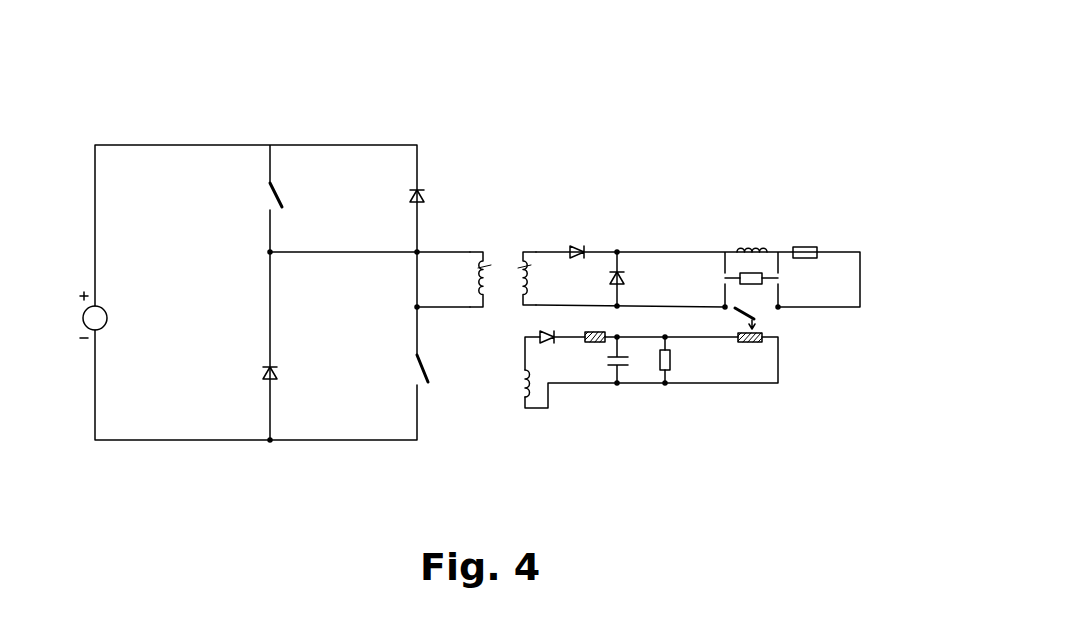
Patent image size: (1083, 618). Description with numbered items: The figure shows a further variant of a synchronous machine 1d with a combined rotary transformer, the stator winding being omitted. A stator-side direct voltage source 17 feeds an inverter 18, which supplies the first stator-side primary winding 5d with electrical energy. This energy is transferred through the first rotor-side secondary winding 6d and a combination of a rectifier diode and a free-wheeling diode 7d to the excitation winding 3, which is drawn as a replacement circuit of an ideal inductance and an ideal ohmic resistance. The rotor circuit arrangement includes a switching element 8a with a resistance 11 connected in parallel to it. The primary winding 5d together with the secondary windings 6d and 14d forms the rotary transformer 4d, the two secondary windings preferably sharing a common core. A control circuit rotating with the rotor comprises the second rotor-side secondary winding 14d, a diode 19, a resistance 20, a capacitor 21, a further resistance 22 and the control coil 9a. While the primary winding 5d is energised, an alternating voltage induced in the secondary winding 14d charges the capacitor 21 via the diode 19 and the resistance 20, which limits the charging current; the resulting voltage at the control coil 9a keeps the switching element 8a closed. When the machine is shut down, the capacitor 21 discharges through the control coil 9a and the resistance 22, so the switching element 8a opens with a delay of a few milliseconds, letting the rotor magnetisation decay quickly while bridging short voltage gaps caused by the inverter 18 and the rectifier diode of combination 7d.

The synchronous machine 1d is at (718, 118).
The excitation winding 3 is at (823, 238).
The transformer 4d is at (548, 206).
The first stator-side primary winding 5d is at (484, 264).
The first rotor-side secondary winding 6d is at (526, 264).
The combination of a rectifier diode and a free-wheeling diode 7d is at (635, 240).
The switching element 8a is at (757, 317).
The control coil 9a is at (764, 341).
The resistance 11 is at (748, 277).
The second rotor-side secondary winding 14d is at (519, 392).
The stator-side direct voltage source 17 is at (101, 310).
The inverter 18 is at (415, 134).
The diode 19 is at (530, 338).
The resistance 20 is at (595, 345).
The capacitor 21 is at (628, 366).
The further resistance 22 is at (668, 365).